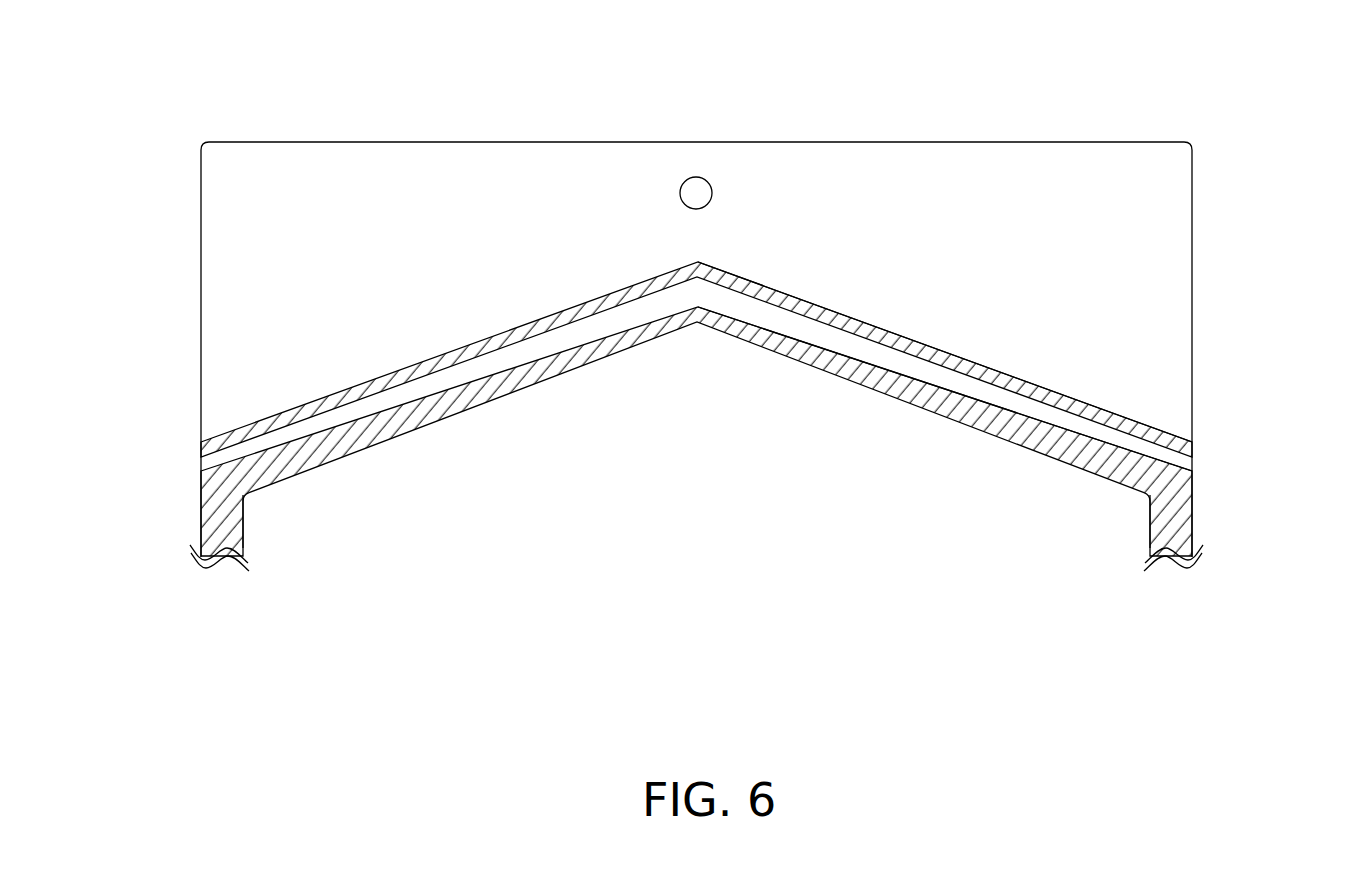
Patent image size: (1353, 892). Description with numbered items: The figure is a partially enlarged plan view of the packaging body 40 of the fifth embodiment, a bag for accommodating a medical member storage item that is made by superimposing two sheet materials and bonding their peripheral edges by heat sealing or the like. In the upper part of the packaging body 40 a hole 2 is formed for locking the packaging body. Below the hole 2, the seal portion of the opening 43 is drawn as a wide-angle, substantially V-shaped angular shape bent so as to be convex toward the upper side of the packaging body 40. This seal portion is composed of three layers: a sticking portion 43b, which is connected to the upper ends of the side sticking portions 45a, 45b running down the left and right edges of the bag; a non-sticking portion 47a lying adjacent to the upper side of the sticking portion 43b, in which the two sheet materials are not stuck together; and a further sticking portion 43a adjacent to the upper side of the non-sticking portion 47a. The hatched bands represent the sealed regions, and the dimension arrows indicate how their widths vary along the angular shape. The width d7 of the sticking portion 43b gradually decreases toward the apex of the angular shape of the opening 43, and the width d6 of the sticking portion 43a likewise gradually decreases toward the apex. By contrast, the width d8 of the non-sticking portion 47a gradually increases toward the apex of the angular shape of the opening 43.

The hole 2 is at (697, 192).
The packaging body 40 is at (1208, 168).
The opening 43 is at (696, 372).
The sticking portion 43a is at (458, 349).
The sticking portion 43b is at (760, 338).
The non-sticking portion 47a is at (837, 345).
The sticking portion 45a is at (215, 507).
The sticking portion 45b is at (1183, 505).
The width of sticking portion 43a d6 is at (338, 440).
The width of sticking portion 43b d7 is at (1060, 405).
The width of non-sticking portion 47a d8 is at (946, 425).